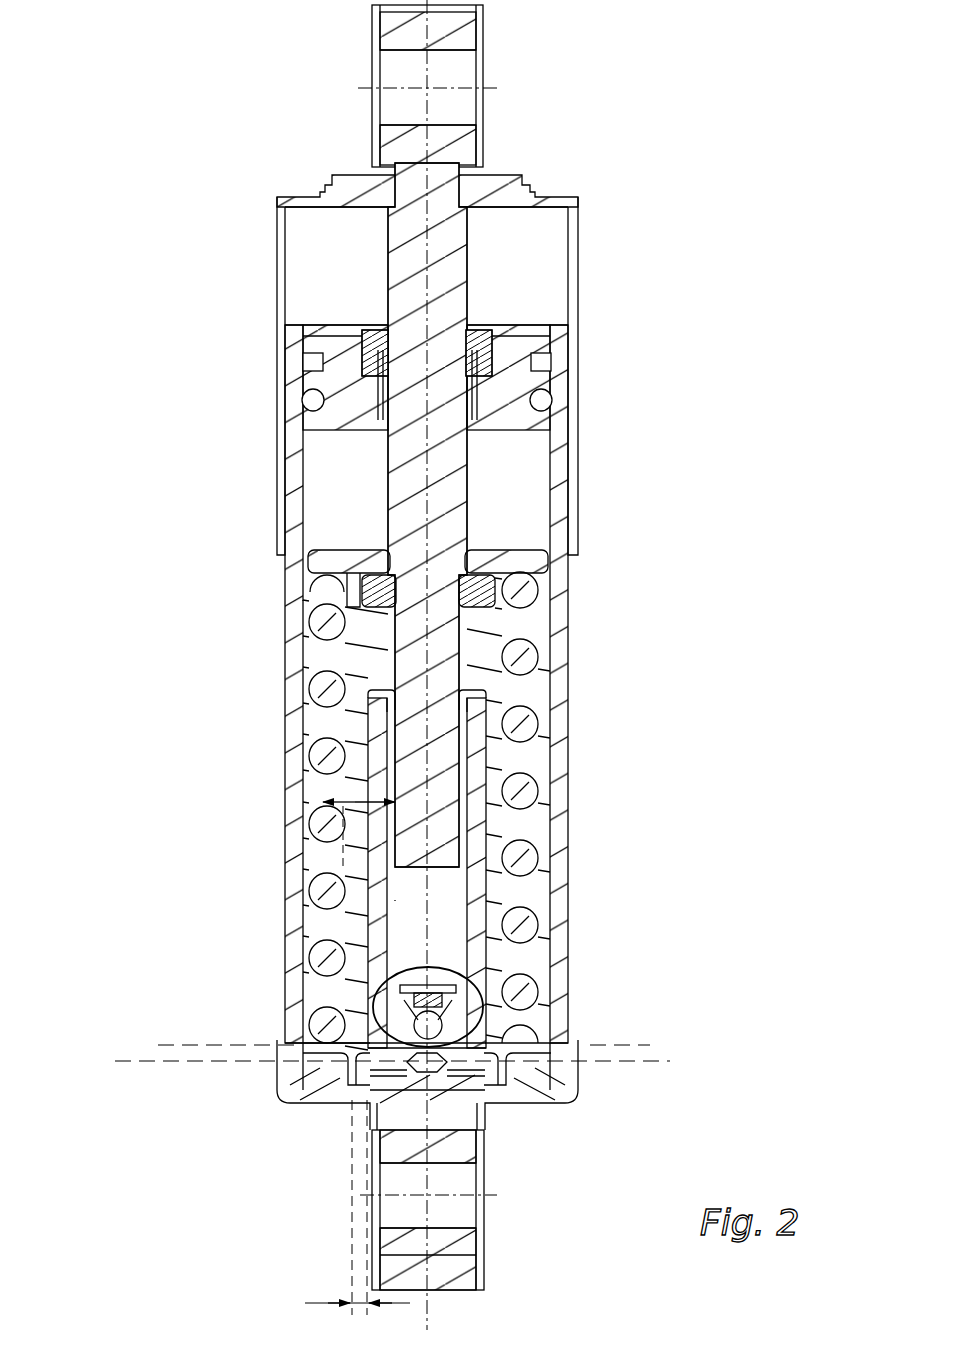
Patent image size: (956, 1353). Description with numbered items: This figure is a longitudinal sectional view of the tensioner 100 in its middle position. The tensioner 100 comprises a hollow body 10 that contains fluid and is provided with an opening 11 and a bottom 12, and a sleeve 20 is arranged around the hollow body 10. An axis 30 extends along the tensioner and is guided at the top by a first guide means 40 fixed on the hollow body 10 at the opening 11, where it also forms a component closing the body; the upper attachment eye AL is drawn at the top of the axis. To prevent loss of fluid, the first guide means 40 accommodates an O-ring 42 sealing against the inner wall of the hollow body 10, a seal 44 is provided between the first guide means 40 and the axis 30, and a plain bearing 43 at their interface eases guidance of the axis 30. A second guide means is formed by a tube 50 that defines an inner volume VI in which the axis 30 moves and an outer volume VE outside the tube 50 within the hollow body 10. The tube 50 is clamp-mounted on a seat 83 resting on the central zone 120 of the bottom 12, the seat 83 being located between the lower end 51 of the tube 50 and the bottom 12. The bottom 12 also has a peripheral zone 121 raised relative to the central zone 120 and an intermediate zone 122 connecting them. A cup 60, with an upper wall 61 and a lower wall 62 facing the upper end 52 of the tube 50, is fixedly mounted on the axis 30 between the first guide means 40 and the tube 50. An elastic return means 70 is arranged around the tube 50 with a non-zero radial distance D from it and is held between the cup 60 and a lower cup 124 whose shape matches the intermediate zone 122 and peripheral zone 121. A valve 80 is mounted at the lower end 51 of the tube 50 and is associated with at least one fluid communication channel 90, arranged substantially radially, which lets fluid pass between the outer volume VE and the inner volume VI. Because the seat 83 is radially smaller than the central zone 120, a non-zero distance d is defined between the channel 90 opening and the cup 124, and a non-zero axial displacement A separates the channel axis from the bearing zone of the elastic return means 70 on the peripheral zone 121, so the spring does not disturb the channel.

The tensioner 100 is at (170, 326).
The upper attachment eye AL is at (436, 66).
The axis 30 is at (478, 240).
The opening 11 is at (542, 330).
The seal 44 is at (372, 338).
The plain bearing 43 is at (362, 392).
The O-ring 42 is at (300, 404).
The first guide means 40 is at (535, 433).
The sleeve 20 is at (585, 488).
The cup 60 is at (332, 545).
The upper wall of the cup 61 is at (530, 548).
The lower wall of the cup 62 is at (500, 590).
The hollow body 10 is at (570, 645).
The upper end of the tube 52 is at (482, 700).
The tube 50 is at (480, 798).
The elastic return means 70 is at (322, 762).
The outer volume VE is at (350, 664).
The inner volume VI is at (410, 932).
The radial distance D is at (359, 836).
The valve 80 is at (455, 968).
The seat 83 is at (462, 1000).
The lower end of the tube 51 is at (455, 1022).
The central zone 120 is at (478, 1103).
The bottom 12 is at (530, 1068).
The fluid communication channel 90 is at (360, 1092).
The peripheral zone 121 is at (320, 1065).
The intermediate zone 122 is at (387, 1067).
The cup 124 is at (308, 1048).
The axial displacement A is at (120, 1058).
The distance d is at (357, 1207).